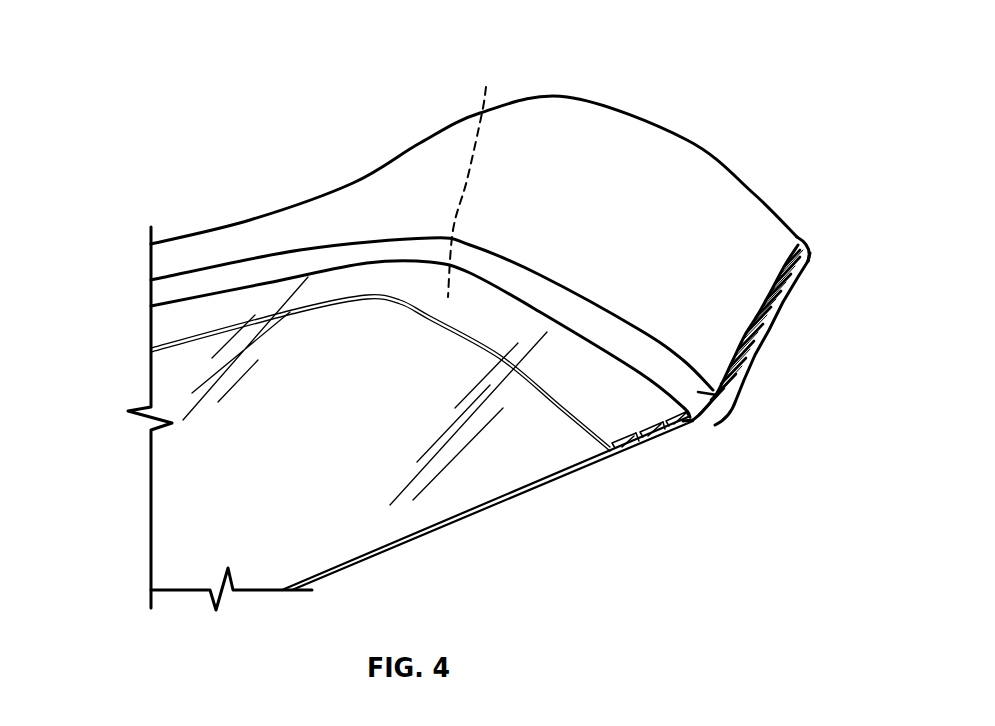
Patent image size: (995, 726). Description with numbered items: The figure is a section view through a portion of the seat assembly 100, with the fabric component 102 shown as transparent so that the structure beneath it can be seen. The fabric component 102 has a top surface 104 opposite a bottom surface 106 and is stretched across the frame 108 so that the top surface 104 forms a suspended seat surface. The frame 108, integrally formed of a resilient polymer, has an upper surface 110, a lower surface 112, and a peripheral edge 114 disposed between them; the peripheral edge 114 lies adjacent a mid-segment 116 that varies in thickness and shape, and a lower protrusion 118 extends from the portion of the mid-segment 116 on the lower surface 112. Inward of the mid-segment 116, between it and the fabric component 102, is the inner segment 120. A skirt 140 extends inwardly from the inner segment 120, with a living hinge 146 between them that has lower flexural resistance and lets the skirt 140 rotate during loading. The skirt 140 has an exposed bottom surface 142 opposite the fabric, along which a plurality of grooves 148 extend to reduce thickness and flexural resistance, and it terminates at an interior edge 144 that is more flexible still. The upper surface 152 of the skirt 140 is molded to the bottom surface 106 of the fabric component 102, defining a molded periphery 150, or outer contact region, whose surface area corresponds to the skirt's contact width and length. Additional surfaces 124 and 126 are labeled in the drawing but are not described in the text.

The seat assembly 100 is at (798, 108).
The fabric component 102 is at (187, 408).
The top surface 104 is at (220, 372).
The bottom surface 106 is at (425, 530).
The frame 108 is at (583, 130).
The upper surface 110 is at (180, 250).
The lower surface 112 is at (790, 287).
The peripheral edge 114 is at (810, 253).
The mid-segment 116 is at (740, 328).
The lower protrusion 118 is at (720, 394).
The inner segment 120 is at (733, 413).
The inner panel 124 is at (243, 237).
The seal top edge 126 is at (793, 240).
The skirt 140 is at (653, 443).
The bottom surface 142 is at (625, 458).
The interior edge 144 is at (617, 457).
The living hinge 146 is at (690, 420).
The grooves 148 is at (640, 445).
The molded periphery 150 is at (410, 282).
The upper surface 152 is at (476, 177).